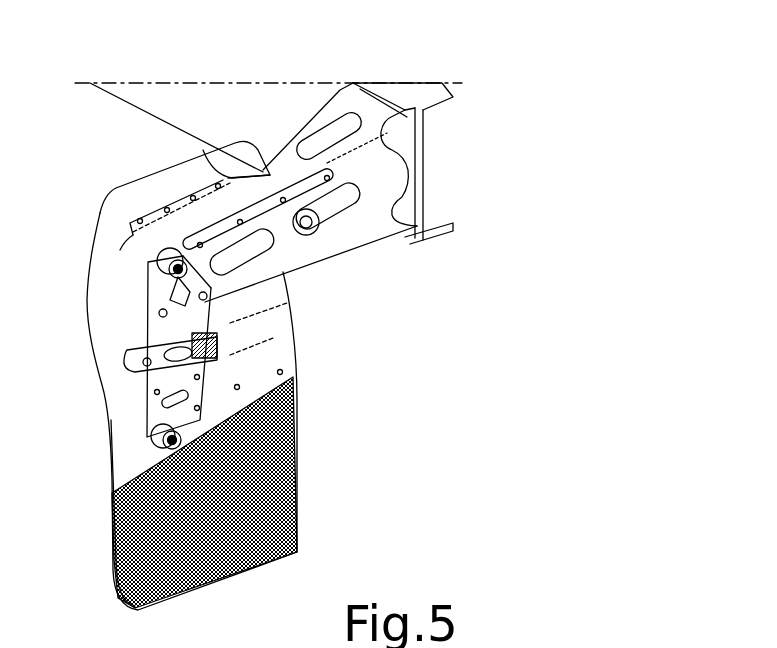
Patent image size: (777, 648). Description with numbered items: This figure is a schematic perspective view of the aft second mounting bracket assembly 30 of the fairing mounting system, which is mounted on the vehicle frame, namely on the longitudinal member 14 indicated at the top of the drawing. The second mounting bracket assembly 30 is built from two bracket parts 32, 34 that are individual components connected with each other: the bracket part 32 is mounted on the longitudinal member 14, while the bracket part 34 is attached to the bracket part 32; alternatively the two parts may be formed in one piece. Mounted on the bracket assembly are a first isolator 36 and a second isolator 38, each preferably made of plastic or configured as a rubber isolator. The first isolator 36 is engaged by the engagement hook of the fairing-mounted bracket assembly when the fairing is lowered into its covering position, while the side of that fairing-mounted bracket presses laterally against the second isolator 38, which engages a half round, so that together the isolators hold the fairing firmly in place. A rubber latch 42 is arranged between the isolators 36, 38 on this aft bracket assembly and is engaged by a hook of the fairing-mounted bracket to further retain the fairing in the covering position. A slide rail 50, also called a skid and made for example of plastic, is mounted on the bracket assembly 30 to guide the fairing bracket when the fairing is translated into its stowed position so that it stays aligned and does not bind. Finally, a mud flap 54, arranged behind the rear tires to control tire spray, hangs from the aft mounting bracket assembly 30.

The longitudinal member 14 is at (288, 108).
The second mounting bracket assembly 30 is at (320, 265).
The bracket part 32 is at (205, 146).
The bracket part 34 is at (127, 323).
The first isolator 36 is at (128, 258).
The second isolator 38 is at (150, 436).
The latch 42 is at (127, 366).
The slide rail 50 is at (325, 225).
The mud flap 54 is at (297, 500).